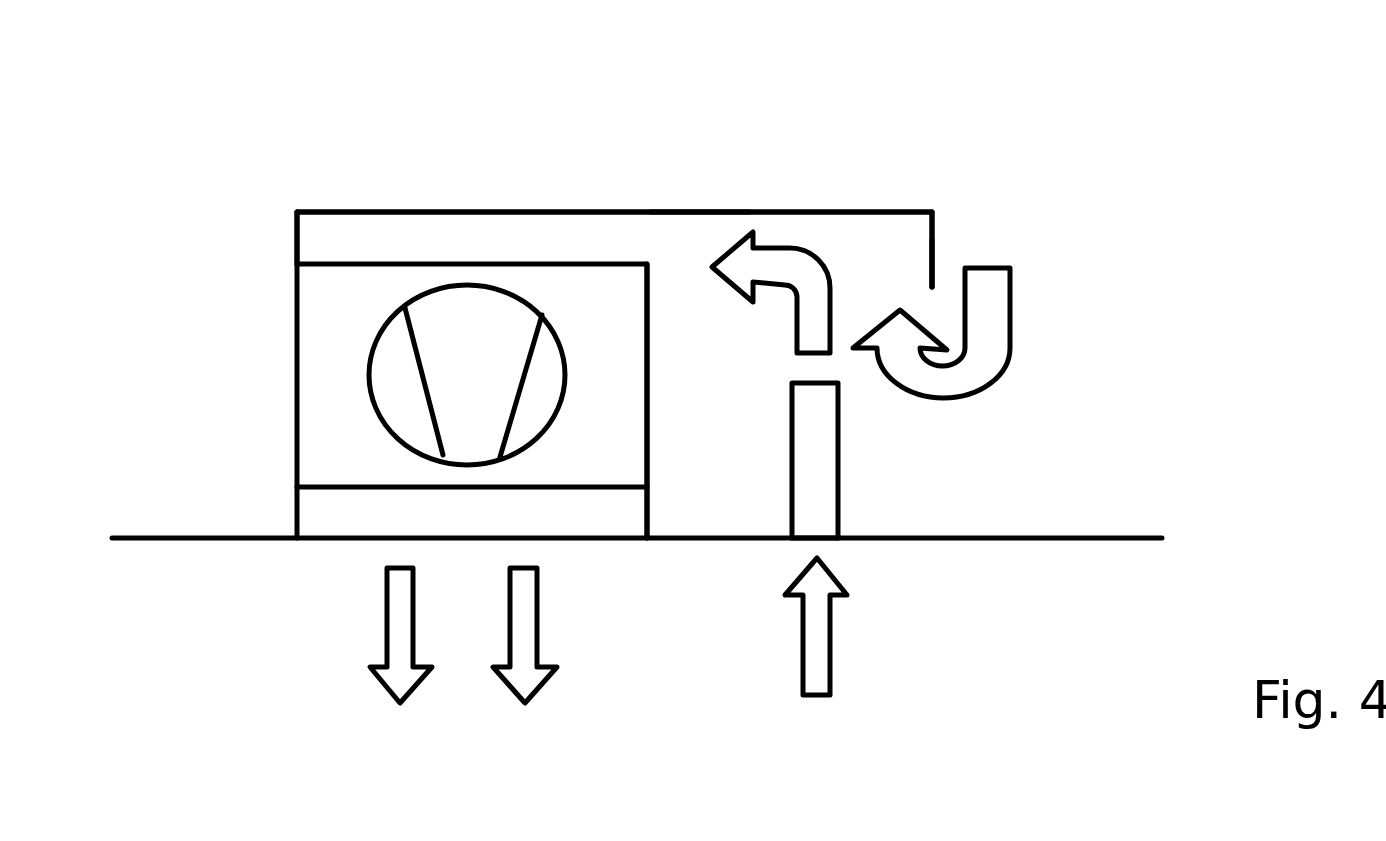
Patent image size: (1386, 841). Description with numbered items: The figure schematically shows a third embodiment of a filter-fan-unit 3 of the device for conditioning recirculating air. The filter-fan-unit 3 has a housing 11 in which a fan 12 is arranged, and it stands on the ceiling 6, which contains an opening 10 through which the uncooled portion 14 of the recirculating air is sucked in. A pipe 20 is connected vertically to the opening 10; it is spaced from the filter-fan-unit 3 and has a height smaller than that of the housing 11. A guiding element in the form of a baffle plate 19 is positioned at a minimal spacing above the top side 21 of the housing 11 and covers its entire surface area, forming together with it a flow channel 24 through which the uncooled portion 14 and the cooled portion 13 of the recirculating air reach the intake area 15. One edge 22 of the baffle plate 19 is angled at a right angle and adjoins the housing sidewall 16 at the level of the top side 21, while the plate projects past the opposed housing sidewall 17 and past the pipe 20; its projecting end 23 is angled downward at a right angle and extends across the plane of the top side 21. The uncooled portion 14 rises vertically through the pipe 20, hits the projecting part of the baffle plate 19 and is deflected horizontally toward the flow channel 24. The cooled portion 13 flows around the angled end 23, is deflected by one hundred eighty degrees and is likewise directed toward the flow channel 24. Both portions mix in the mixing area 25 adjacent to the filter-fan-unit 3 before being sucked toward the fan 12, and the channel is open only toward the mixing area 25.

The filter-fan-unit 3 is at (252, 328).
The ceiling 6 is at (1100, 538).
The opening 10 is at (815, 537).
The housing 11 is at (297, 370).
The fan 12 is at (453, 333).
The cooled portion of the recirculating air 13 is at (977, 367).
The uncooled portion of the recirculating air 14 is at (810, 290).
The intake area 15 is at (455, 255).
The housing sidewall 16 is at (297, 425).
The opposed housing sidewall 17 is at (647, 357).
The baffle plate 19 is at (700, 208).
The pipe 20 is at (838, 443).
The top side of the housing 21 is at (333, 260).
The angled edge 22 is at (293, 223).
The projecting end 23 is at (935, 237).
The flow channel 24 is at (565, 238).
The mixing area 25 is at (888, 240).